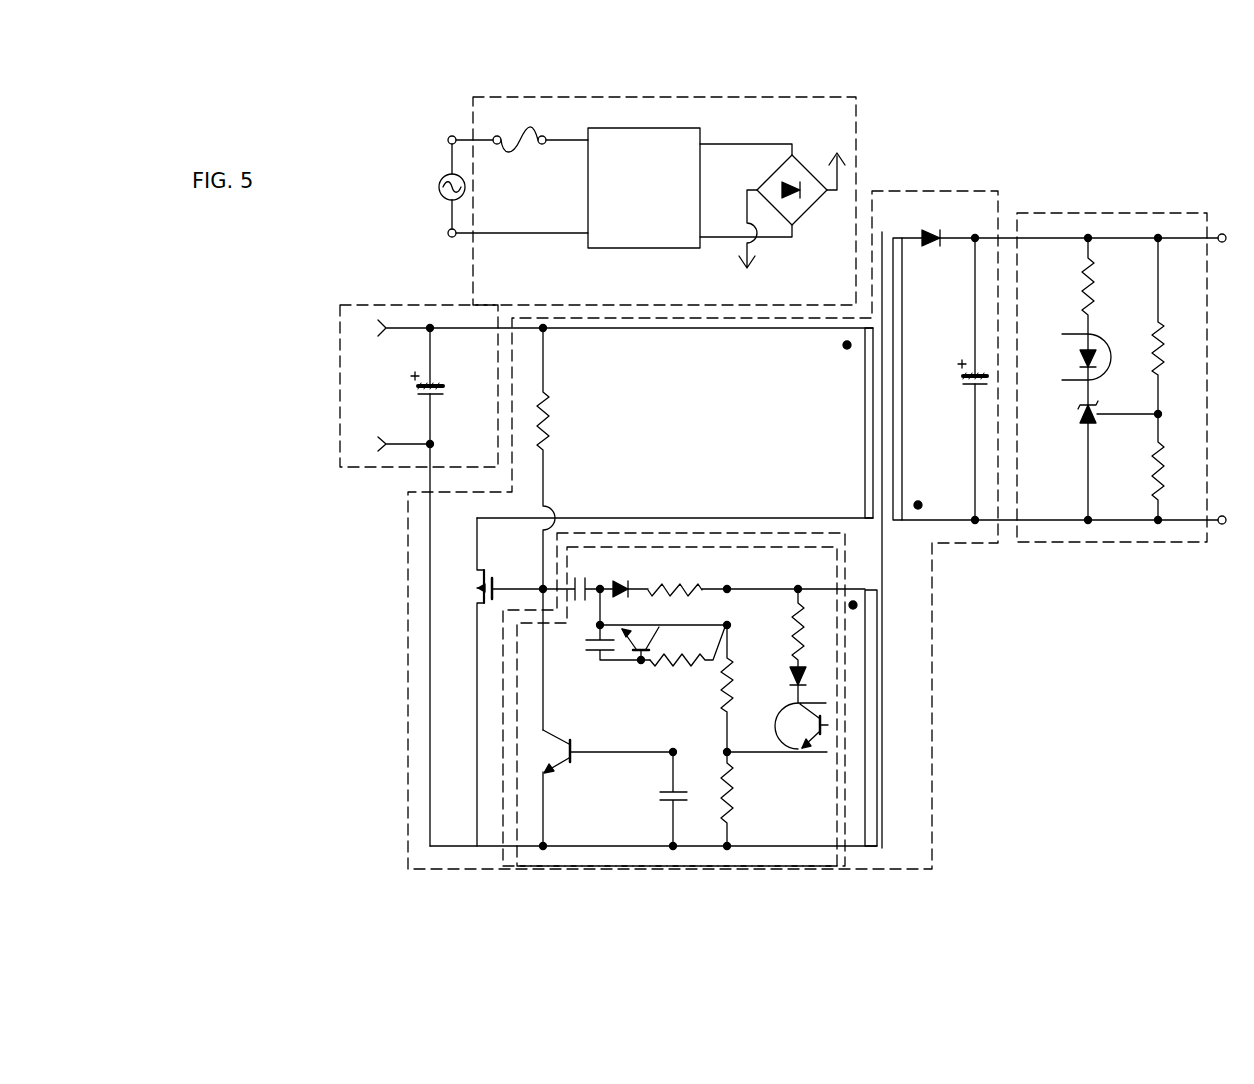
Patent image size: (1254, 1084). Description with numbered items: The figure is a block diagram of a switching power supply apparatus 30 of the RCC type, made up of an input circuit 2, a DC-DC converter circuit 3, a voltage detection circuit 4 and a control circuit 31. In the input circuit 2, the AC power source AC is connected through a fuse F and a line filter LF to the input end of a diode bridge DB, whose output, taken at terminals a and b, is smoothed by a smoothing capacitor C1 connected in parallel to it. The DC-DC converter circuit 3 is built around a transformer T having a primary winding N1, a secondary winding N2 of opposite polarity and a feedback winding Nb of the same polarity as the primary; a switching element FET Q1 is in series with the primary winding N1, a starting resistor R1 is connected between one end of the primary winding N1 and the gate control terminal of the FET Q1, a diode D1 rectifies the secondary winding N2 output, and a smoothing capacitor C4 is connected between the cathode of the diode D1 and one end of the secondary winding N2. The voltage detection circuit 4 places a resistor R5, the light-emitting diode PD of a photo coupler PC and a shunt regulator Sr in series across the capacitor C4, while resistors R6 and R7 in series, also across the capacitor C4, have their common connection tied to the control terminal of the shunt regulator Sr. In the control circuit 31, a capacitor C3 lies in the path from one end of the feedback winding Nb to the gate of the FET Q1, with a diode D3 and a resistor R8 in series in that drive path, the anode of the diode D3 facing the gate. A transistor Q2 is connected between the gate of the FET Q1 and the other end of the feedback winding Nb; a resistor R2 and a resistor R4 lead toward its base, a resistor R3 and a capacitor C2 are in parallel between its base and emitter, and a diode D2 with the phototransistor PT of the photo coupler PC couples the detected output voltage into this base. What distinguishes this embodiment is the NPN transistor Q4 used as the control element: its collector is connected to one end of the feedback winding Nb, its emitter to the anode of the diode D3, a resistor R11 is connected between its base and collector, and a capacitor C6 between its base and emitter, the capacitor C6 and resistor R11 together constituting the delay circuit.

The switching power supply apparatus 30 is at (881, 145).
The input circuit 2 is at (676, 90).
The DC-DC converter circuit 3 is at (922, 186).
The voltage detection circuit 4 is at (1096, 212).
The control circuit 31 is at (652, 906).
The AC power source AC is at (432, 186).
The fuse F is at (519, 129).
The line filter LF is at (644, 188).
The diode bridge DB is at (792, 169).
The terminal a is at (836, 158).
The terminal b is at (748, 246).
The smoothing capacitor C1 is at (419, 575).
The transformer T is at (883, 527).
The primary winding N1 is at (849, 423).
The secondary winding N2 is at (915, 379).
The feedback winding Nb is at (887, 718).
The diode D1 is at (932, 225).
The smoothing capacitor C4 is at (961, 379).
The resistor R5 is at (1107, 294).
The photo coupler PC is at (1071, 347).
The light-emitting diode PD is at (1070, 377).
The shunt regulator Sr is at (1102, 460).
The resistor R6 is at (1174, 326).
The resistor R7 is at (1174, 467).
The starting resistor R1 is at (558, 529).
The FET Q1 is at (510, 682).
The capacitor C3 is at (571, 575).
The diode D3 is at (624, 574).
The resistor R8 is at (756, 573).
The NPN transistor Q4 is at (644, 627).
The capacitor C6 is at (607, 650).
The resistor R11 is at (687, 661).
The resistor R2 is at (710, 688).
The transistor Q2 is at (608, 780).
The capacitor C2 is at (657, 799).
The resistor R3 is at (744, 799).
The resistor R4 is at (779, 628).
The diode D2 is at (779, 683).
The phototransistor PT is at (777, 743).